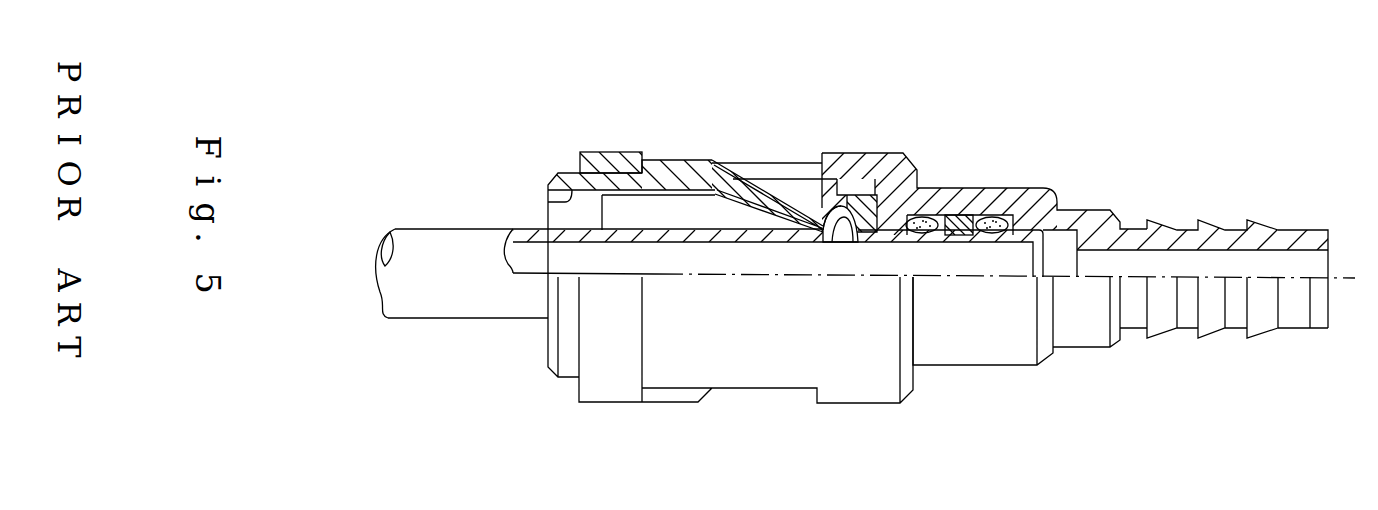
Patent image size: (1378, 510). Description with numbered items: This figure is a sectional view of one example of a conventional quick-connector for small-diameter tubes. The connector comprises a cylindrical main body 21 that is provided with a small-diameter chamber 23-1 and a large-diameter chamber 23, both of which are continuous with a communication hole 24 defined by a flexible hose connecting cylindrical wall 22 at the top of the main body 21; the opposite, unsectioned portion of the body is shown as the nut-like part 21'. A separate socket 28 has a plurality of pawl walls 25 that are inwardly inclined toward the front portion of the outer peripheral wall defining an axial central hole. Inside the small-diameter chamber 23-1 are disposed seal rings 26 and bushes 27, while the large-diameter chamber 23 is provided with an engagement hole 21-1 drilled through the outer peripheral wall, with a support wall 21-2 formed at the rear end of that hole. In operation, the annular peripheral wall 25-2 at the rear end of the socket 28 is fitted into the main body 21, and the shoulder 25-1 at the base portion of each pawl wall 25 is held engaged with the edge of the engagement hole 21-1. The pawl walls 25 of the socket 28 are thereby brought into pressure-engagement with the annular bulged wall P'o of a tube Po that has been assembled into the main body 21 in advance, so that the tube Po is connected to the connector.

The tube Po is at (462, 303).
The annular bulged wall P'o is at (867, 140).
The cylindrical main body 21 is at (943, 227).
The nut 21' is at (730, 352).
The engagement hole 21-1 is at (775, 170).
The support wall 21-2 is at (610, 152).
The flexible hose connecting cylindrical wall 22 is at (1170, 240).
The large-diameter chamber 23 is at (686, 215).
The small-diameter chamber 23-1 is at (893, 238).
The communication hole 24 is at (1243, 263).
The pawl walls 25 is at (797, 210).
The shoulder 25-1 is at (667, 160).
The annular peripheral wall 25-2 is at (543, 200).
The seal rings 26 is at (993, 215).
The bushes 27 is at (862, 226).
The socket 28 is at (727, 163).